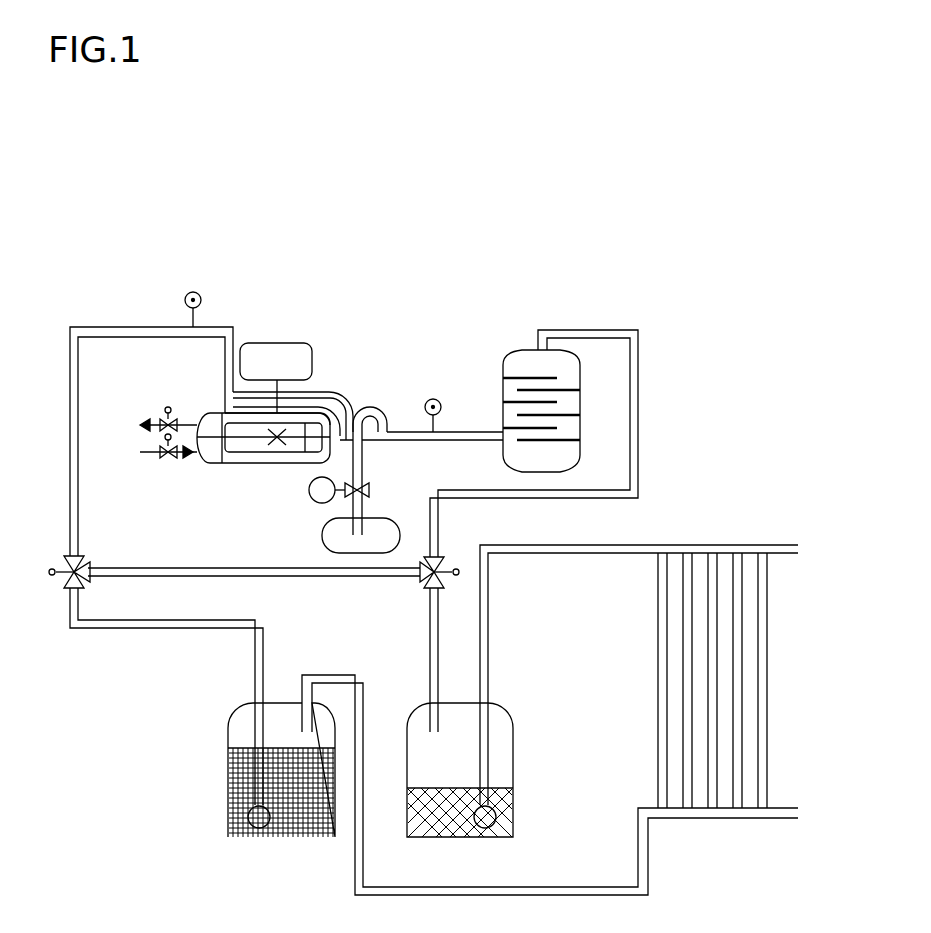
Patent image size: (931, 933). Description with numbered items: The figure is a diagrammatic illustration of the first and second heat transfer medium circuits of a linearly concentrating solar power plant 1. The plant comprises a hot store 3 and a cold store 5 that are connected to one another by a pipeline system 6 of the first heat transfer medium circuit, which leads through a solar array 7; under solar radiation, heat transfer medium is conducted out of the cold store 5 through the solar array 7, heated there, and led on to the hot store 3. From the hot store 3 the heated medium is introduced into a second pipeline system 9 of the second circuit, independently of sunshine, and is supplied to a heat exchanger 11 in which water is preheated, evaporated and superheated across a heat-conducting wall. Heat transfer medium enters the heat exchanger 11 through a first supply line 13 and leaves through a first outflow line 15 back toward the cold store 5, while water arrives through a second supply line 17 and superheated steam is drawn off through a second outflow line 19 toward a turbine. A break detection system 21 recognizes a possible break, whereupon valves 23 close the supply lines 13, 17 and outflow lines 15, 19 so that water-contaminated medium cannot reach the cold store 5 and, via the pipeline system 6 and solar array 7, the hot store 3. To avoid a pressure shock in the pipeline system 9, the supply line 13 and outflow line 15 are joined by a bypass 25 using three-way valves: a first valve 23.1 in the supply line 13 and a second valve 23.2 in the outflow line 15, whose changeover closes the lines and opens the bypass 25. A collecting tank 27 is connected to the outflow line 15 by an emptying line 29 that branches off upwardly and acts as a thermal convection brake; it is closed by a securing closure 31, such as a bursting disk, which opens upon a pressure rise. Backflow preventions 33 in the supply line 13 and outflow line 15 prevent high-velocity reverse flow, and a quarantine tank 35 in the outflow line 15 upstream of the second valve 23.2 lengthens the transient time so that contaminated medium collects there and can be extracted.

The linearly concentrating solar power plant 1 is at (568, 302).
The hot store 3 is at (300, 838).
The cold store 5 is at (515, 790).
The pipeline system 6 is at (652, 868).
The solar array 7 is at (774, 665).
The second pipeline system 9 is at (70, 447).
The heat exchanger 11 is at (318, 410).
The first supply line 13 is at (236, 327).
The first outflow line 15 is at (403, 432).
The second supply line 17 is at (150, 453).
The second outflow line 19 is at (150, 420).
The break detection system 21 is at (254, 345).
The valves 23 is at (174, 416).
The first valve 23.1 is at (68, 590).
The second valve 23.2 is at (445, 565).
The bypass 25 is at (272, 577).
The collecting tank 27 is at (322, 537).
The emptying line 29 is at (366, 455).
The securing closure 31 is at (370, 492).
The backflow preventions 33 is at (191, 292).
The quarantine tank 35 is at (518, 357).